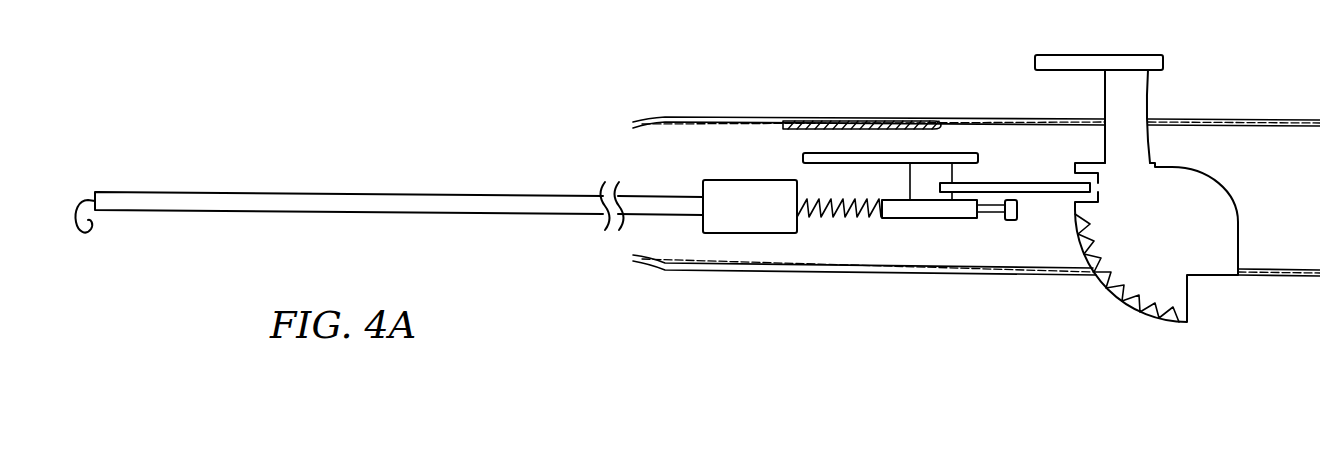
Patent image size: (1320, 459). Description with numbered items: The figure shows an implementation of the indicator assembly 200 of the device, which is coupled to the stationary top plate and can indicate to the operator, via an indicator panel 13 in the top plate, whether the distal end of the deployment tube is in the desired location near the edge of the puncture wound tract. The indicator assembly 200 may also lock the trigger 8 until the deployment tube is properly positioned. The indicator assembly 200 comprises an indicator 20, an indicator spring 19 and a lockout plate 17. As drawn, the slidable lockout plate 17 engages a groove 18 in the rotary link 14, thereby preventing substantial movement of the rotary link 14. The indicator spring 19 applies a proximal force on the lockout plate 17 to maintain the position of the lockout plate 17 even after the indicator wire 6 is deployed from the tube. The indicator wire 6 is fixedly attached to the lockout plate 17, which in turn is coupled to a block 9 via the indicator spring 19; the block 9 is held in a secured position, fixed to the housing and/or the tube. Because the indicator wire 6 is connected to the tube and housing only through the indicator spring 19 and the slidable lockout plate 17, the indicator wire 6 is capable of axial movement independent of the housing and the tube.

The indicator assembly 200 is at (780, 70).
The indicator wire 6 is at (78, 204).
The trigger 8 is at (1125, 52).
The block 9 is at (742, 180).
The indicator panel 13 is at (849, 118).
The rotary link 14 is at (1150, 92).
The lockout plate 17 is at (1023, 183).
The groove 18 is at (1090, 188).
The indicator spring 19 is at (853, 220).
The indicator 20 is at (962, 153).